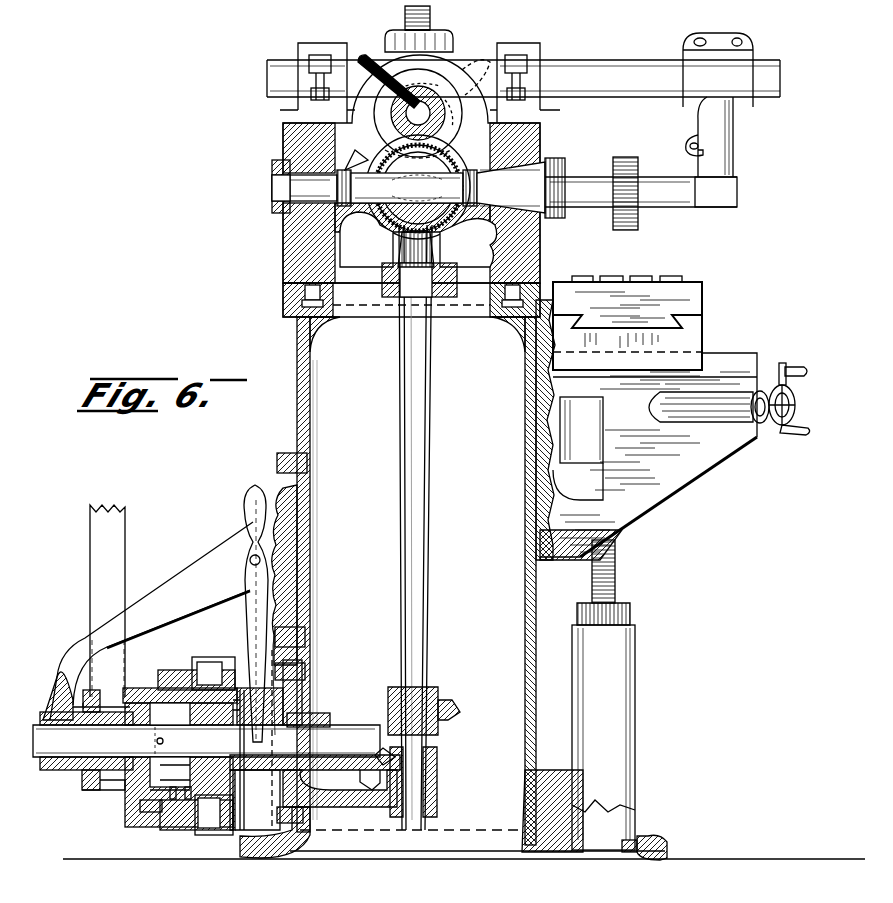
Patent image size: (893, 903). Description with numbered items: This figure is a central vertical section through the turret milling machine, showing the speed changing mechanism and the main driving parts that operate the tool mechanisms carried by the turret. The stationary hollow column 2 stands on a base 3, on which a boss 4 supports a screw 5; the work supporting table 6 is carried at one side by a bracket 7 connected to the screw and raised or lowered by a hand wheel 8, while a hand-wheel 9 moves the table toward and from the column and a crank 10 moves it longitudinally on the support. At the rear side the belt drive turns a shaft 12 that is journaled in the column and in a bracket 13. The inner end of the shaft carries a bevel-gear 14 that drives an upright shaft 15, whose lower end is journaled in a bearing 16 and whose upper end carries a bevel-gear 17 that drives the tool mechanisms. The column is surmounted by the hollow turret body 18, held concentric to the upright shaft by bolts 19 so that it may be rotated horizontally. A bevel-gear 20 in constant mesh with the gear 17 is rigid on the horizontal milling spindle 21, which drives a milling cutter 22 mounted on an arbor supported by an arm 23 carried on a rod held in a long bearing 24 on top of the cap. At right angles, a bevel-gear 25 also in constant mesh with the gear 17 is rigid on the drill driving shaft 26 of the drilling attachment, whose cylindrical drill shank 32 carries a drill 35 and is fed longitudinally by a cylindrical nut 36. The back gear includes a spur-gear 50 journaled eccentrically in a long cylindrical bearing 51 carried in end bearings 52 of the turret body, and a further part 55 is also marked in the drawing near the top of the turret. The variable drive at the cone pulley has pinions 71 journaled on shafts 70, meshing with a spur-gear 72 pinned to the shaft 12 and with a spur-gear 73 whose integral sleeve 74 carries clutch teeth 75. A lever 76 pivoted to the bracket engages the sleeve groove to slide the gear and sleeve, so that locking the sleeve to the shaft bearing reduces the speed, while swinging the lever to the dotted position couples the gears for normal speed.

The stationary hollow column 2 is at (297, 413).
The base 3 is at (667, 846).
The boss 4 is at (603, 726).
The screw 5 is at (615, 575).
The work supporting table 6 is at (702, 297).
The bracket 7 is at (648, 455).
The hand wheel 8 is at (715, 424).
The hand-wheel 9 is at (780, 389).
The crank 10 is at (241, 693).
The shaft 12 is at (206, 741).
The bracket 13 is at (151, 621).
The bevel-gear 14 is at (360, 782).
The upright shaft 15 is at (432, 481).
The bearing 16 is at (437, 767).
The bevel-gear 17 is at (366, 239).
The turret body 18 is at (295, 265).
The bolts 19 is at (290, 115).
The bevel-gear 20 is at (358, 152).
The milling spindle 21 is at (408, 187).
The milling cutter 22 is at (625, 157).
The arbor support arm 23 is at (733, 138).
The bearing 24 is at (500, 70).
The bevel-gear 25 is at (447, 150).
The drill driving shaft 26 is at (462, 248).
The drill shank 32 is at (405, 18).
The drill 35 is at (386, 68).
The cylindrical nut 36 is at (429, 34).
The spur-gear 50 is at (418, 103).
The cylindrical bearing 51 is at (418, 100).
The end bearings 52 is at (440, 84).
The stop segment 55 is at (480, 58).
The pinion shafts 70 is at (130, 795).
The pinions 71 is at (160, 674).
The spur-gear 72 is at (150, 805).
The spur-gear 73 is at (205, 810).
The sleeve 74 is at (248, 780).
The clutch teeth 75 is at (268, 712).
The lever 76 is at (246, 590).